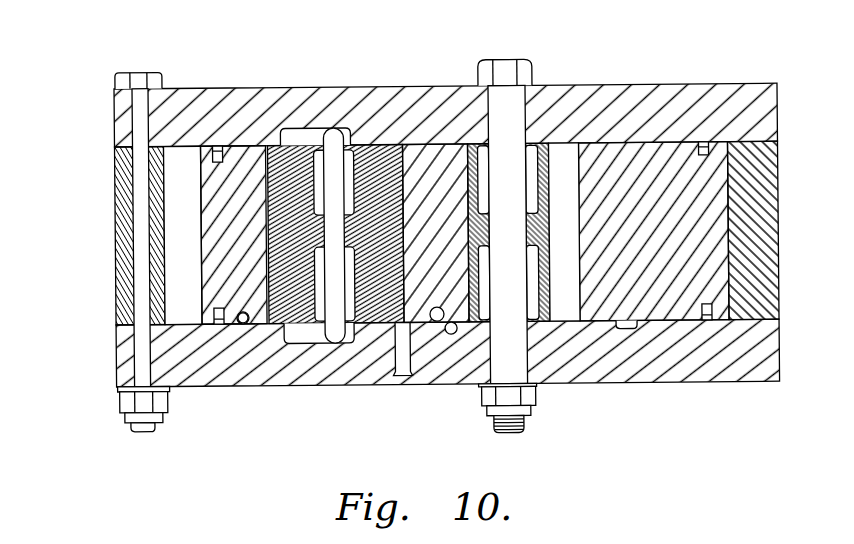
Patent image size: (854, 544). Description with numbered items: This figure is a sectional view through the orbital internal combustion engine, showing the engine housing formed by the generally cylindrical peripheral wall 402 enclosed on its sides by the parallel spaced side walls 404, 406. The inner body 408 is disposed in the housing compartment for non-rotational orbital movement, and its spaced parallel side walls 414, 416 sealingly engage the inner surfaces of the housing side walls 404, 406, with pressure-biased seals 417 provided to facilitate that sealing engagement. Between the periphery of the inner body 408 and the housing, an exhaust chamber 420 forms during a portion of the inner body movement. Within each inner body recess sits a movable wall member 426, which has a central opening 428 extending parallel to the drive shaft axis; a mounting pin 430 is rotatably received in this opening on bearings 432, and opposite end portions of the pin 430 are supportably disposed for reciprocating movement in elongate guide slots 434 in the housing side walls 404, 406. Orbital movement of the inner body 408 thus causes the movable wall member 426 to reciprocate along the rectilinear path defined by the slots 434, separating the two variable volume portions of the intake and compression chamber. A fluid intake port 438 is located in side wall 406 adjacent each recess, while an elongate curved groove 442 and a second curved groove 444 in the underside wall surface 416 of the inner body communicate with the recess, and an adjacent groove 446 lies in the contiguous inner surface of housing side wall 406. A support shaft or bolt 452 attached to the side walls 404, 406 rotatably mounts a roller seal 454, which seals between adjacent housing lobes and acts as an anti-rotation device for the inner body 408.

The peripheral wall 402 is at (118, 250).
The side wall 404 is at (617, 102).
The side wall 406 is at (605, 368).
The inner body 408 is at (437, 163).
The side wall of the inner body 414 is at (219, 148).
The side wall of the inner body 416 is at (241, 326).
The pressure-biased seal 417 is at (218, 148).
The exhaust chamber 420 is at (180, 292).
The movable wall member 426 is at (386, 155).
The central opening 428 is at (328, 222).
The mounting pin 430 is at (341, 346).
The bearings 432 is at (355, 142).
The guide slot 434 is at (297, 136).
The fluid intake port 438 is at (400, 380).
The elongate curved groove 442 is at (245, 328).
The second elongate curved groove 444 is at (438, 326).
The groove 446 is at (635, 327).
The support shaft or bolt 452 is at (563, 308).
The roller seal 454 is at (580, 227).